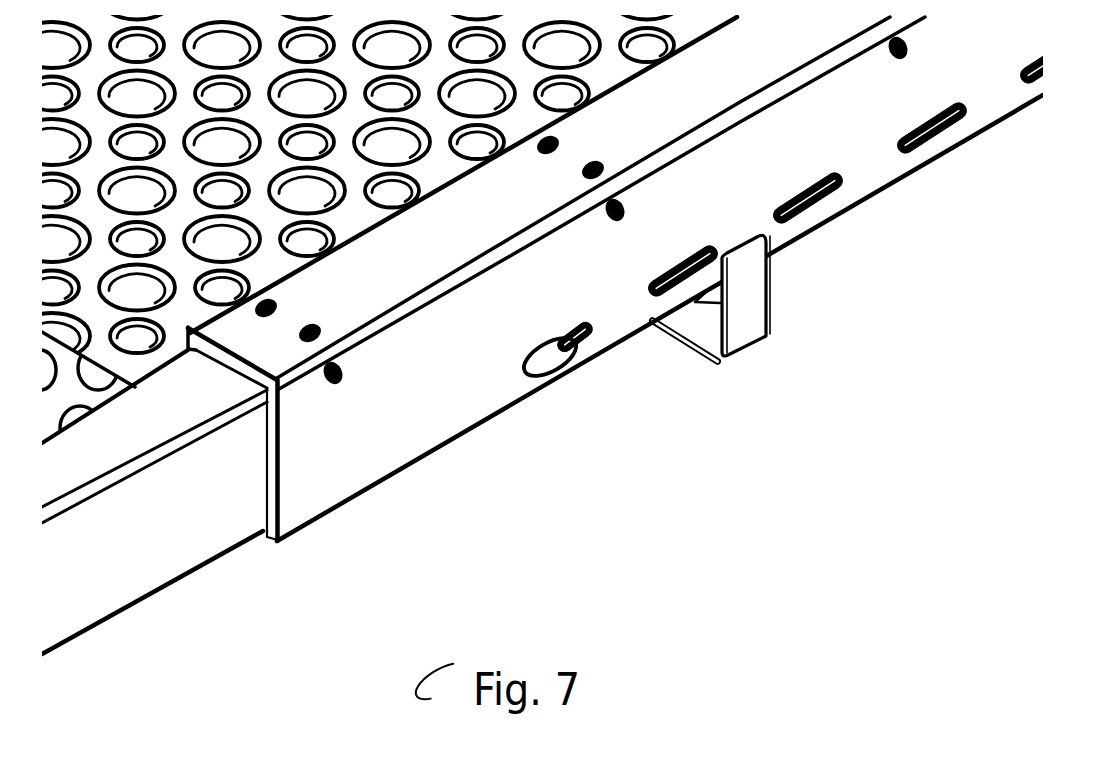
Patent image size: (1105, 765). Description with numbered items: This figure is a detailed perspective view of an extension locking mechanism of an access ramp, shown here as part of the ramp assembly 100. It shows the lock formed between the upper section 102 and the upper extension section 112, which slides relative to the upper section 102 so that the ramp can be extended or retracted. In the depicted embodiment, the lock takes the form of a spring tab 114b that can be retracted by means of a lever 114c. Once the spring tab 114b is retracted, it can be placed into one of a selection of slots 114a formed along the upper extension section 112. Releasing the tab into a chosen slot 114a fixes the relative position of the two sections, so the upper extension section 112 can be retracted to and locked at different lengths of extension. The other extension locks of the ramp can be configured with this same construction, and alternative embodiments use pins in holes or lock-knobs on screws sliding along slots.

The support beam 100 is at (513, 593).
The upper section 102 is at (486, 231).
The upper extension section 112 is at (867, 153).
The slots 114a is at (793, 215).
The spring tab 114b is at (553, 352).
The lever 114c is at (753, 322).